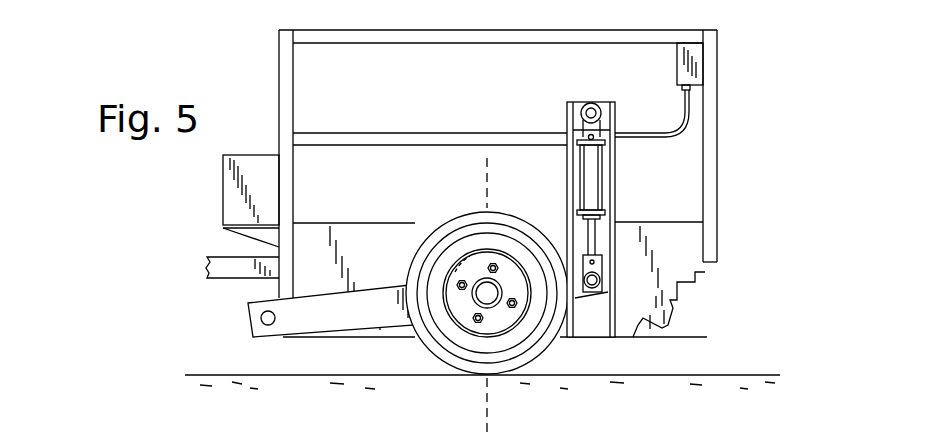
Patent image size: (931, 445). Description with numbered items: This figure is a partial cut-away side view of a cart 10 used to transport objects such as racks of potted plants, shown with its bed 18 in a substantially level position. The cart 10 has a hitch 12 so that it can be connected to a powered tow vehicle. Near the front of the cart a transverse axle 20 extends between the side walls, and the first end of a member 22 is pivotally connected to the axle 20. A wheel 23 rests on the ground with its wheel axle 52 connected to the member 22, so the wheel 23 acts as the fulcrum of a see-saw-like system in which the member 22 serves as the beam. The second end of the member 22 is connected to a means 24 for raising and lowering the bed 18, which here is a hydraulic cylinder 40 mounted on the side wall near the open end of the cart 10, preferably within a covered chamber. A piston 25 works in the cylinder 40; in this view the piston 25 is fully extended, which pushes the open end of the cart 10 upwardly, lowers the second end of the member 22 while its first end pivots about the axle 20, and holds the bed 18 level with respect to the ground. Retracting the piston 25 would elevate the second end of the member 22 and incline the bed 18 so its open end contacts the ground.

The cart 10 is at (166, 217).
The hitch 12 is at (227, 280).
The bed 18 is at (697, 332).
The transverse axle 20 is at (250, 322).
The member 22 is at (320, 322).
The wheel 23 is at (472, 362).
The means for raising and lowering the bed 24 is at (603, 192).
The piston 25 is at (595, 243).
The hydraulic cylinder 40 is at (593, 165).
The wheel axle 52 is at (478, 296).